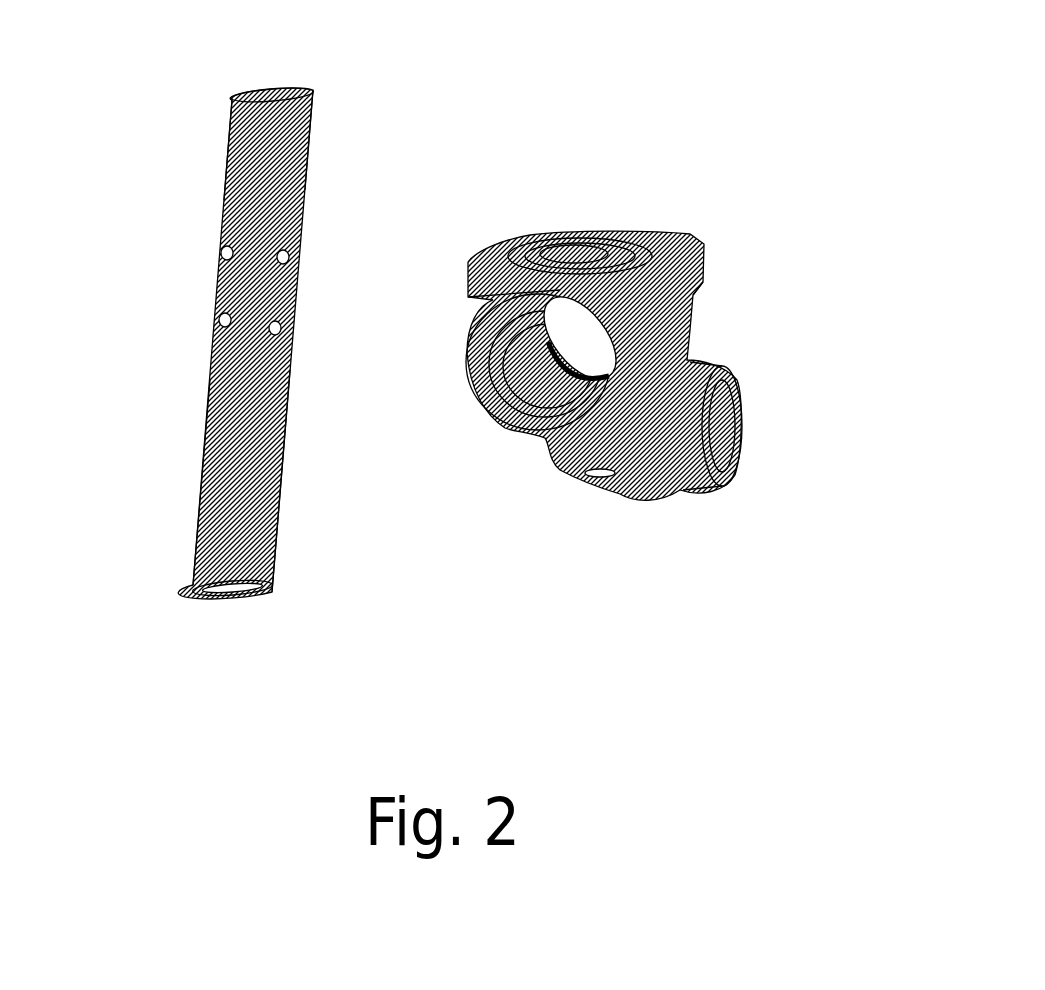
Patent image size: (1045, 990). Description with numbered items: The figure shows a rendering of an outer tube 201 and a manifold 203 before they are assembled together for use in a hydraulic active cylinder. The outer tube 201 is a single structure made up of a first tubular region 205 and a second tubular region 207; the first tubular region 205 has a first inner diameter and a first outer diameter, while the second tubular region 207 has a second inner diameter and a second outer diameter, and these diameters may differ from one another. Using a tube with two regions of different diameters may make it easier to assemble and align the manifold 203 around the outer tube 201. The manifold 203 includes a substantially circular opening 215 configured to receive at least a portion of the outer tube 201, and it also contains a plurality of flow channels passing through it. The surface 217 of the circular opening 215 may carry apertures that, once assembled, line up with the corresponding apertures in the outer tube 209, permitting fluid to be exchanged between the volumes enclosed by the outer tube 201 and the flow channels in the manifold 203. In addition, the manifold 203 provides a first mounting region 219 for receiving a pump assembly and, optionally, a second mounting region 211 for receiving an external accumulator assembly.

The outer tube 201 is at (183, 306).
The first tubular region 205 is at (247, 212).
The apertures in the outer tube 209 is at (275, 328).
The second tubular region 207 is at (240, 455).
The manifold 203 is at (670, 331).
The first mounting region 219 is at (557, 240).
The second mounting region 211 is at (740, 410).
The circular opening 215 is at (570, 340).
The surface of the circular opening 217 is at (515, 353).